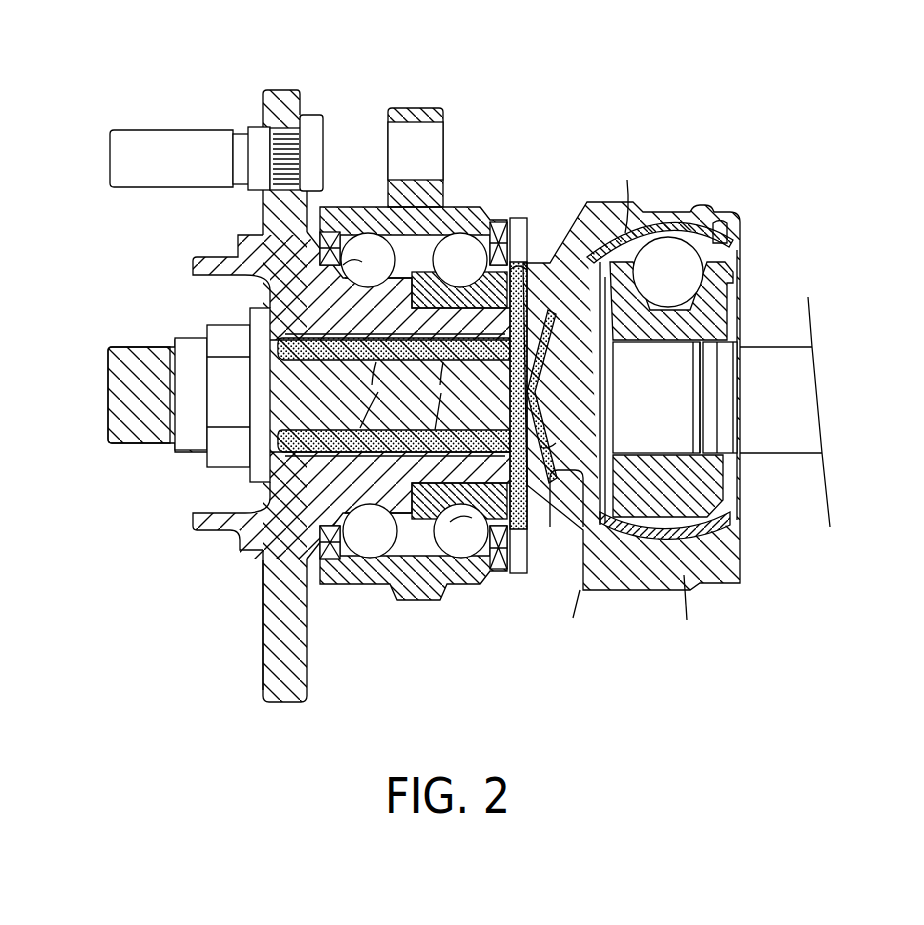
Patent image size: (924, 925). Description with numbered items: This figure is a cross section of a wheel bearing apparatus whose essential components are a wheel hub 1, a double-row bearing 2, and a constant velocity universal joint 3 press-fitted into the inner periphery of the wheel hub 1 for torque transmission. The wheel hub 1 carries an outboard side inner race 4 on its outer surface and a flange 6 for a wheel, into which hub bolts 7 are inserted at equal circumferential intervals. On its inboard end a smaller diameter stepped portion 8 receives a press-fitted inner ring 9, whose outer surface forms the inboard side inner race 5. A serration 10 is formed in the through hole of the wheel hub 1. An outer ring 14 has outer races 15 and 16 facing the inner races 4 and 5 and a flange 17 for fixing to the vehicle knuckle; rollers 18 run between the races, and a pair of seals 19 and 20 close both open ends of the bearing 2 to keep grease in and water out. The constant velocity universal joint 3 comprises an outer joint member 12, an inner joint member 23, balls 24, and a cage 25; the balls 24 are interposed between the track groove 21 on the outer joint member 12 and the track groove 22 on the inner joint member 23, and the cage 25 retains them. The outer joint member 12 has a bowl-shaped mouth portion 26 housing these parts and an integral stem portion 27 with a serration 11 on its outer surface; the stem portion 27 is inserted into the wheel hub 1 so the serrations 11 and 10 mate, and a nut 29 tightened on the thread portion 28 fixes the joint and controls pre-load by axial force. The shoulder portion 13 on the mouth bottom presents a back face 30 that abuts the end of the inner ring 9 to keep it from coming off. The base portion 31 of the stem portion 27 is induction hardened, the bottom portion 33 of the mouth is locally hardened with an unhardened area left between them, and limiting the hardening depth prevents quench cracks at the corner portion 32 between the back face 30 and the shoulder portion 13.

The wheel hub 1 is at (316, 384).
The double-row bearing 2 is at (363, 399).
The constant velocity universal joint 3 is at (708, 416).
The outboard side inner race 4 is at (257, 280).
The inboard side inner race 5 is at (418, 448).
The flange 6 is at (285, 100).
The hub bolts 7 is at (192, 147).
The smaller diameter stepped portion 8 is at (427, 313).
The inner ring 9 is at (502, 570).
The serration 10 is at (263, 594).
The serration 11 is at (290, 415).
The outer joint member 12 is at (655, 612).
The shoulder portion 13 is at (540, 257).
The outer ring 14 is at (417, 590).
The outer race 15 is at (367, 234).
The outer race 16 is at (453, 547).
The flange 17 is at (417, 112).
The rollers 18 is at (358, 256).
The seal 19 is at (327, 583).
The seal 20 is at (498, 222).
The track groove 21 is at (721, 222).
The track groove 22 is at (690, 307).
The inner joint member 23 is at (690, 480).
The balls 24 is at (666, 247).
The cage 25 is at (720, 518).
The mouth portion 26 is at (600, 207).
The stem portion 27 is at (383, 480).
The thread portion 28 is at (120, 347).
The nut 29 is at (217, 387).
The back face 30 is at (515, 535).
The base portion 31 is at (525, 430).
The corner portion 32 is at (518, 264).
The bottom portion 33 is at (549, 350).